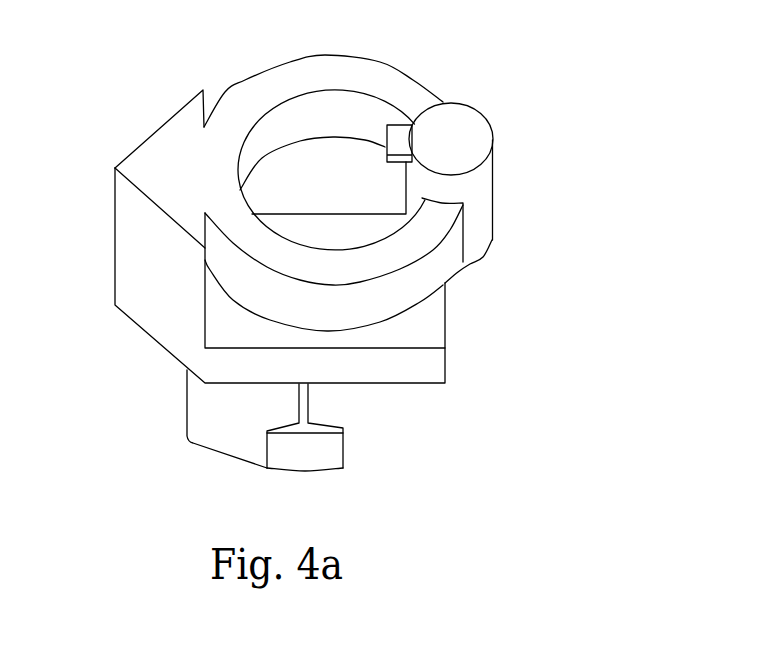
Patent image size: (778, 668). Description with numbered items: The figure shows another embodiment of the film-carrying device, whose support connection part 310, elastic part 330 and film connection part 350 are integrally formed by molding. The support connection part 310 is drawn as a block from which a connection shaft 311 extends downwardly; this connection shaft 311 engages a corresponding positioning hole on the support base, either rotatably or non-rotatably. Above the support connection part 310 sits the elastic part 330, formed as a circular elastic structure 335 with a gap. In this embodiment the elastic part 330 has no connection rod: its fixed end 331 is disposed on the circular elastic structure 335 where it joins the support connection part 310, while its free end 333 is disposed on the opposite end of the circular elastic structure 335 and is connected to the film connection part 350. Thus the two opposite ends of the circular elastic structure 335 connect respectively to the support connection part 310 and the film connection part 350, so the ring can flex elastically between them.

The support connection part 310 is at (158, 303).
The connection shaft 311 is at (223, 418).
The elastic part 330 is at (417, 282).
The fixed end 331 is at (228, 130).
The free end 333 is at (433, 213).
The circular elastic structure 335 is at (350, 77).
The film connection part 350 is at (473, 185).